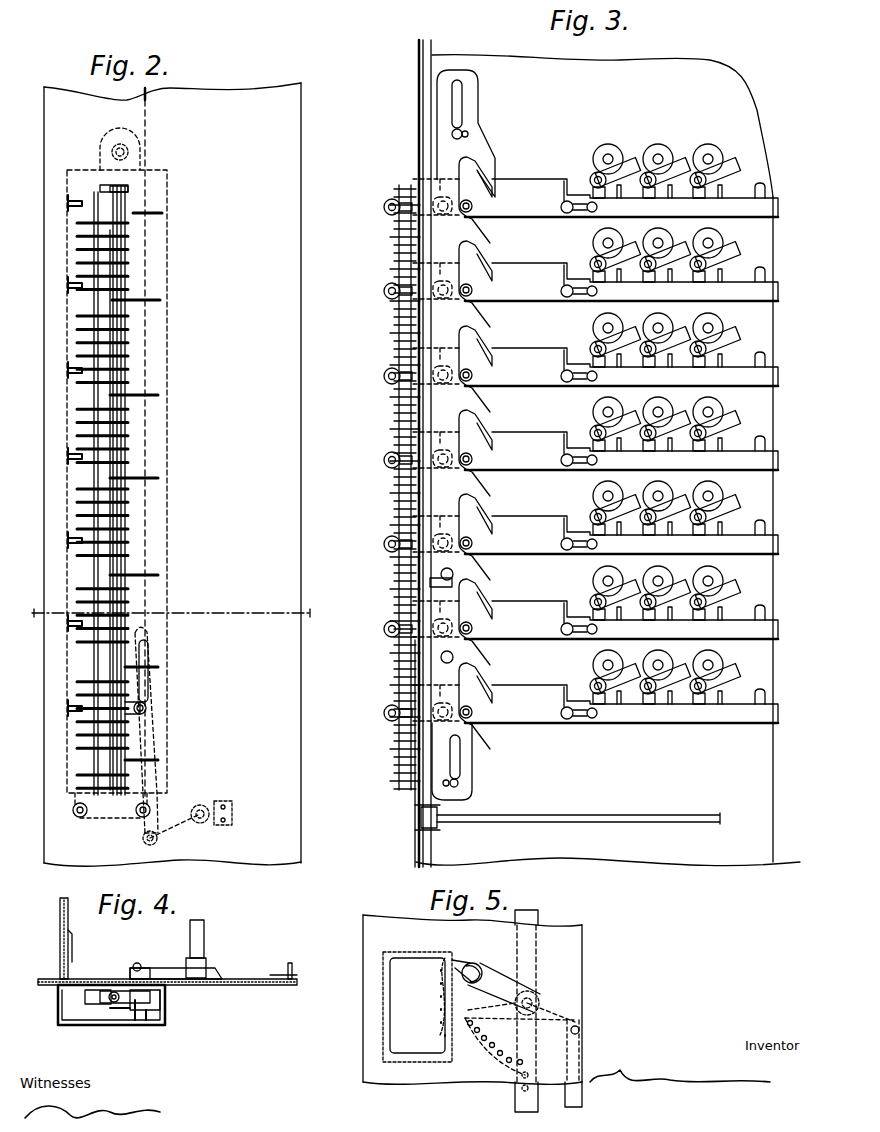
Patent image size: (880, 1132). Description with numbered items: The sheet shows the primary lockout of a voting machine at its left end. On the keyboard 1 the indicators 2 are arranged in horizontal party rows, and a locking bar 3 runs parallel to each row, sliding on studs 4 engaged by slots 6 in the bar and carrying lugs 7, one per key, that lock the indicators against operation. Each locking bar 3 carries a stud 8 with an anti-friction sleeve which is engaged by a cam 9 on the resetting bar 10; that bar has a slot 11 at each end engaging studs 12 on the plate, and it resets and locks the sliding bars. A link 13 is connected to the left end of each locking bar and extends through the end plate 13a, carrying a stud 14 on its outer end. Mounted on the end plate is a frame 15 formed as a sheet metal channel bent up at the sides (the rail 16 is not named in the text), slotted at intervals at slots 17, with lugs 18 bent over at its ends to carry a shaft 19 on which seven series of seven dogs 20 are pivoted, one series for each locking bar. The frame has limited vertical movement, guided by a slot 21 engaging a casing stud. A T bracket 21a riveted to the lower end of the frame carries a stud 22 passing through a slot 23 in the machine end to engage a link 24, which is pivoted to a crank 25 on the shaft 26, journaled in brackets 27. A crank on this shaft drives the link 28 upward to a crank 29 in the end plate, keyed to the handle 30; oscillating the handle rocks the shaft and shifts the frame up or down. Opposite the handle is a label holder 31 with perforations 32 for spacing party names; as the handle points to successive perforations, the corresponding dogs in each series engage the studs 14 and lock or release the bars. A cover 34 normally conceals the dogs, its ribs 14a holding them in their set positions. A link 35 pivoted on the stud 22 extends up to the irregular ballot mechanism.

In FIG. 3, the keyboard 1 is at (735, 92).
In FIG. 3, the indicators 2 is at (610, 153).
In FIG. 3, the locking bar 3 is at (772, 206).
In FIG. 3, the studs 4 is at (590, 212).
In FIG. 3, the slots 6 is at (563, 182).
In FIG. 3, the lugs 7 is at (764, 190).
In FIG. 3, the stud 8 is at (472, 206).
In FIG. 3, the cam 9 is at (478, 340).
In FIG. 3, the resetting bar 10 is at (470, 143).
In FIG. 3, the slot 11 is at (462, 96).
In FIG. 3, the studs 12 is at (460, 130).
In FIG. 3, the link 13 is at (388, 205).
In FIG. 4, the link 13 is at (68, 962).
In FIG. 2, the end plate 13a is at (291, 247).
In FIG. 3, the end plate 13a is at (419, 112).
In FIG. 4, the end plate 13a is at (246, 985).
In FIG. 2, the stud 14 is at (72, 372).
In FIG. 3, the stud 14 is at (392, 297).
In FIG. 4, the stud 14 is at (68, 1025).
In FIG. 4, the ribs 14a is at (94, 1025).
In FIG. 2, the frame 15 is at (114, 485).
In FIG. 2, the guide rail 16 is at (84, 485).
In FIG. 2, the slots 17 is at (122, 210).
In FIG. 2, the lugs 18 is at (120, 186).
In FIG. 2, the shaft 19 is at (138, 378).
In FIG. 2, the dogs 20 is at (162, 214).
In FIG. 4, the dogs 20 is at (150, 998).
In FIG. 2, the slot 21 is at (130, 300).
In FIG. 2, the T bracket 21a is at (144, 704).
In FIG. 2, the stud 22 is at (148, 710).
In FIG. 2, the slot 23 is at (150, 648).
In FIG. 2, the link 24 is at (156, 815).
In FIG. 2, the crank 25 is at (183, 830).
In FIG. 2, the shaft 26 is at (205, 808).
In FIG. 3, the shaft 26 is at (575, 814).
In FIG. 4, the brackets 27 is at (210, 972).
In FIG. 5, the link 28 is at (565, 1092).
In FIG. 5, the crank 29 is at (535, 1000).
In FIG. 5, the handle 30 is at (476, 964).
In FIG. 5, the label holder 31 is at (383, 1017).
In FIG. 5, the perforations 32 is at (441, 1040).
In FIG. 4, the cover 34 is at (158, 1026).
In FIG. 2, the link 35 is at (150, 612).